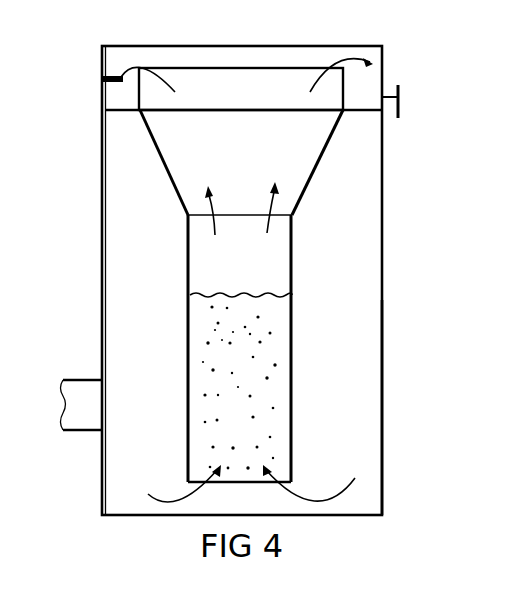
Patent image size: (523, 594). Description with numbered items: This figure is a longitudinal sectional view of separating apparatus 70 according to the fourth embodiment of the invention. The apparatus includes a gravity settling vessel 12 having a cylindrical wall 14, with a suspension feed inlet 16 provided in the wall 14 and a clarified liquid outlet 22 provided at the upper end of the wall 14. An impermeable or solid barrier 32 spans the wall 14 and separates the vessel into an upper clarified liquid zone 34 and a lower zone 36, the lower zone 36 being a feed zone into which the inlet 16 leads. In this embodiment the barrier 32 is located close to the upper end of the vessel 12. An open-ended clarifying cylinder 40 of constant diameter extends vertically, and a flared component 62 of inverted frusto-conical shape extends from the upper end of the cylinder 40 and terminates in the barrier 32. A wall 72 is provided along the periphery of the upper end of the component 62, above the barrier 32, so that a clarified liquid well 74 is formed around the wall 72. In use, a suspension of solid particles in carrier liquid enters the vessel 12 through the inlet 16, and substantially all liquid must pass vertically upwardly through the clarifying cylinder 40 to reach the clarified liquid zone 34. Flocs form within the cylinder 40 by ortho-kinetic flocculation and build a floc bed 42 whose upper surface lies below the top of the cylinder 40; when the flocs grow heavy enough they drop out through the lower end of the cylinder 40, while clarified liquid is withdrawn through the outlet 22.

The gravity settling vessel 12 is at (396, 324).
The cylindrical wall 14 is at (383, 393).
The suspension feed inlet 16 is at (80, 431).
The clarified liquid outlet 22 is at (388, 116).
The impermeable barrier 32 is at (125, 111).
The clarified liquid zone 34 is at (104, 79).
The lower zone 36 is at (122, 234).
The clarifying cylinder 40 is at (291, 423).
The floc bed 42 is at (263, 353).
The flared component 62 is at (325, 148).
The separating apparatus 70 is at (445, 224).
The wall 72 is at (139, 82).
The clarified liquid well 74 is at (121, 58).